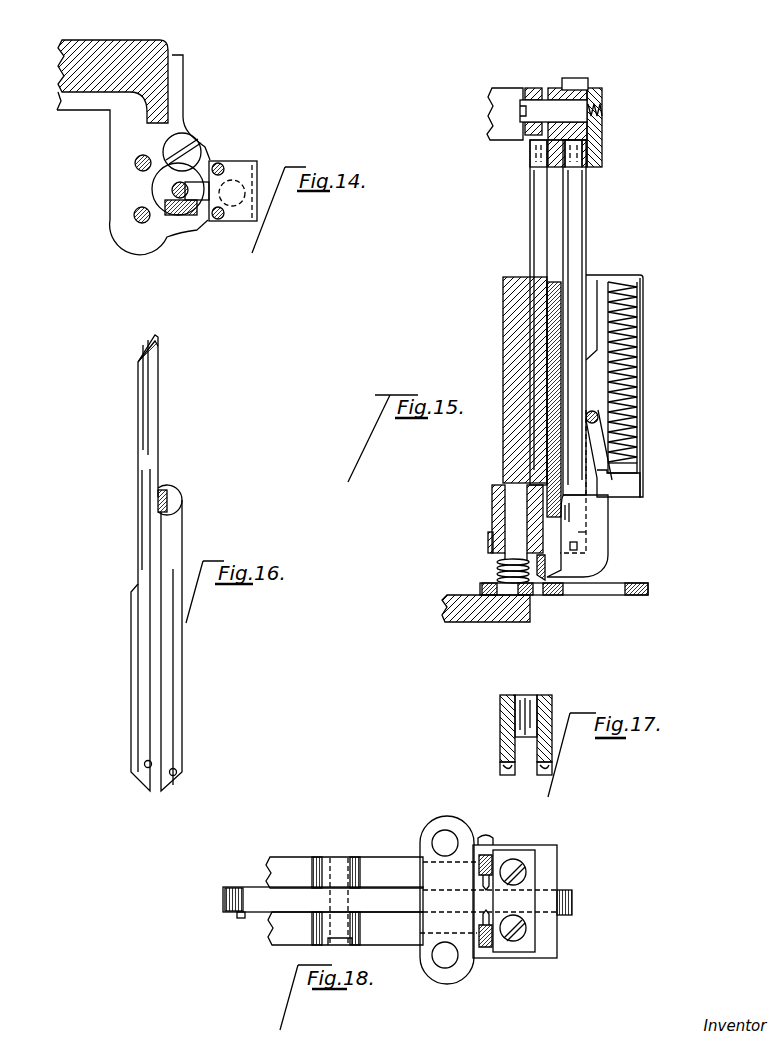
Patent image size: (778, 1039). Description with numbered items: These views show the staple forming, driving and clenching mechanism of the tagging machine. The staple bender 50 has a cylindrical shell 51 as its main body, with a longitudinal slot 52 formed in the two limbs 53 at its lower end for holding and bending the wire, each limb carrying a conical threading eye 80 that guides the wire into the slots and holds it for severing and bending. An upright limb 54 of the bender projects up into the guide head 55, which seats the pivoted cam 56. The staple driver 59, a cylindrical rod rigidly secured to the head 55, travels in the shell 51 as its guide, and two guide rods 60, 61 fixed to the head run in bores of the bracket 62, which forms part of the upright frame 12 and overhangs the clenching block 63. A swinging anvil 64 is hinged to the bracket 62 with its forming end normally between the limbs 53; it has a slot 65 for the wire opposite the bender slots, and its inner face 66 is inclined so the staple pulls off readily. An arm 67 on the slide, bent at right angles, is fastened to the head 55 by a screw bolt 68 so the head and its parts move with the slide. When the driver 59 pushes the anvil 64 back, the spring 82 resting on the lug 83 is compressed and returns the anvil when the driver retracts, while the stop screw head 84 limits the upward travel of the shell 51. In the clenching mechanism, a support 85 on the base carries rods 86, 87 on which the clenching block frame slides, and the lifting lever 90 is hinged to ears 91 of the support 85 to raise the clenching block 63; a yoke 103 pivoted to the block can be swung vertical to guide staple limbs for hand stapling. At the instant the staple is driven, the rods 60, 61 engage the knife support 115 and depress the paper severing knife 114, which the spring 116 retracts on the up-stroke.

In FIG. 14, the upright frame 12 is at (166, 46).
In FIG. 16, the staple bender 50 is at (183, 674).
In FIG. 14, the cylindrical shell 51 is at (166, 190).
In FIG. 16, the cylindrical shell 51 is at (176, 500).
In FIG. 17, the longitudinal slot 52 is at (540, 766).
In FIG. 17, the limbs 53 is at (500, 752).
In FIG. 14, the upright limb 54 is at (184, 216).
In FIG. 16, the upright limb 54 is at (156, 427).
In FIG. 15, the guide head 55 is at (598, 150).
In FIG. 15, the cam 56 is at (582, 85).
In FIG. 14, the staple driver 59 is at (195, 182).
In FIG. 15, the staple driver 59 is at (575, 237).
In FIG. 14, the guide rod 60 is at (134, 218).
In FIG. 14, the guide rod 61 is at (137, 160).
In FIG. 15, the guide rod 61 is at (537, 220).
In FIG. 14, the bracket 62 is at (118, 165).
In FIG. 15, the bracket 62 is at (512, 302).
In FIG. 18, the clenching block 63 is at (524, 888).
In FIG. 15, the swinging anvil 64 is at (598, 518).
In FIG. 15, the slot 65 is at (580, 547).
In FIG. 15, the inner face 66 is at (578, 532).
In FIG. 15, the arm 67 is at (496, 88).
In FIG. 15, the screw bolt 68 is at (533, 112).
In FIG. 16, the conical threading eye 80 is at (177, 770).
In FIG. 17, the conical threading eye 80 is at (500, 766).
In FIG. 15, the spring 82 is at (640, 394).
In FIG. 15, the lug 83 is at (622, 482).
In FIG. 14, the stop screw head 84 is at (189, 148).
In FIG. 18, the support 85 is at (402, 867).
In FIG. 18, the rod 86 is at (448, 961).
In FIG. 18, the rod 87 is at (448, 838).
In FIG. 18, the lifting lever 90 is at (573, 905).
In FIG. 18, the ears 91 is at (338, 867).
In FIG. 18, the yoke 103 is at (549, 940).
In FIG. 15, the paper severing knife 114 is at (548, 566).
In FIG. 15, the knife support 115 is at (489, 540).
In FIG. 15, the spring 116 is at (500, 568).